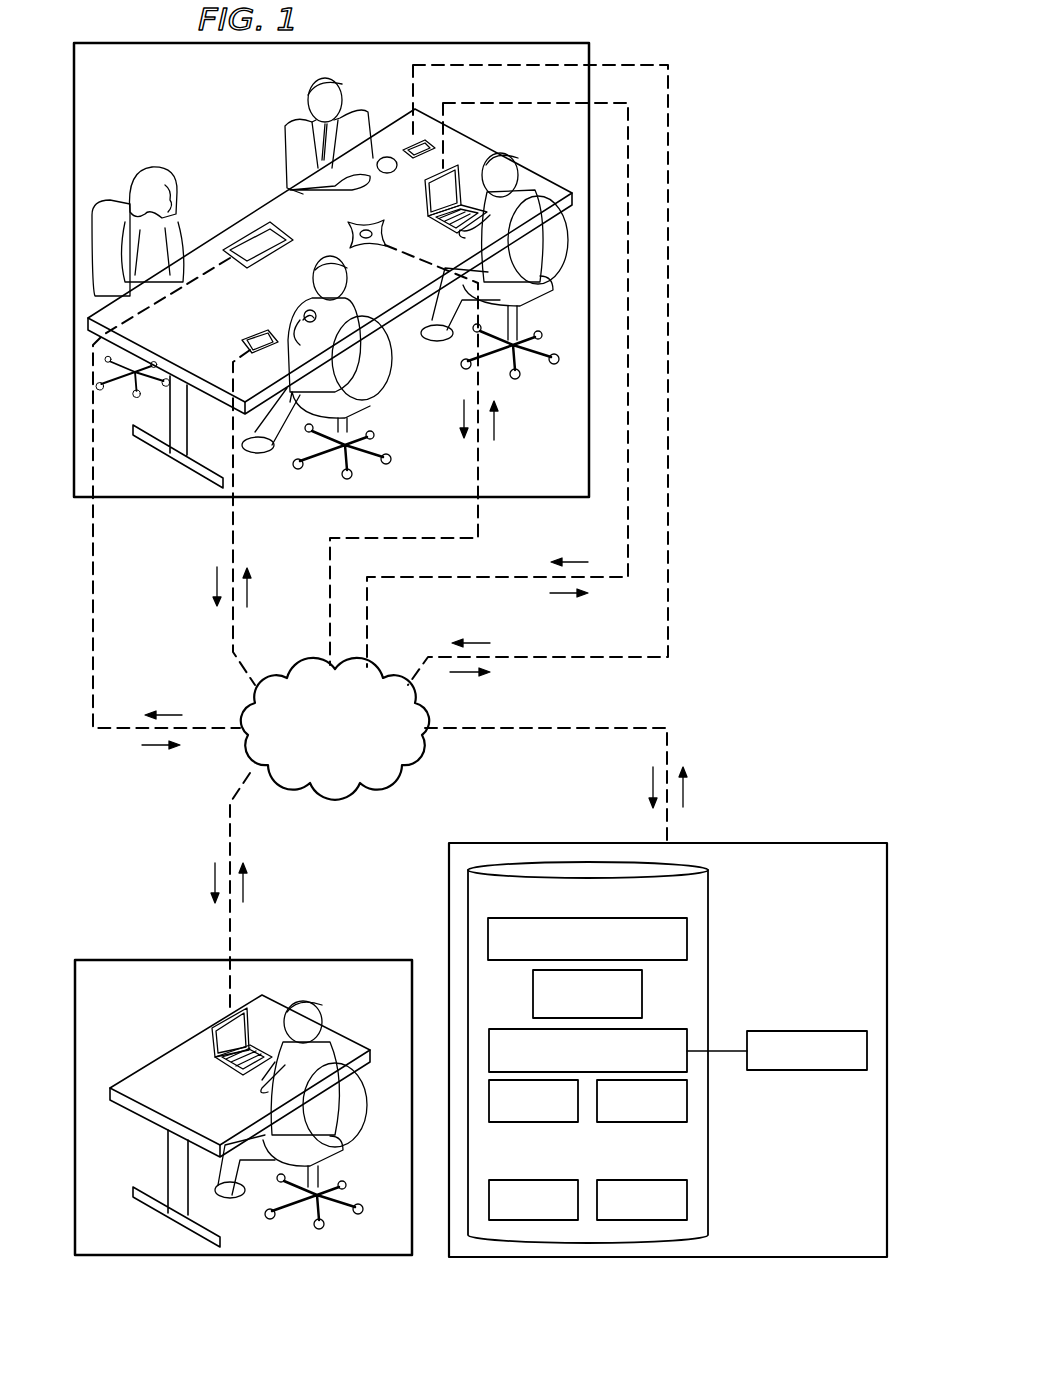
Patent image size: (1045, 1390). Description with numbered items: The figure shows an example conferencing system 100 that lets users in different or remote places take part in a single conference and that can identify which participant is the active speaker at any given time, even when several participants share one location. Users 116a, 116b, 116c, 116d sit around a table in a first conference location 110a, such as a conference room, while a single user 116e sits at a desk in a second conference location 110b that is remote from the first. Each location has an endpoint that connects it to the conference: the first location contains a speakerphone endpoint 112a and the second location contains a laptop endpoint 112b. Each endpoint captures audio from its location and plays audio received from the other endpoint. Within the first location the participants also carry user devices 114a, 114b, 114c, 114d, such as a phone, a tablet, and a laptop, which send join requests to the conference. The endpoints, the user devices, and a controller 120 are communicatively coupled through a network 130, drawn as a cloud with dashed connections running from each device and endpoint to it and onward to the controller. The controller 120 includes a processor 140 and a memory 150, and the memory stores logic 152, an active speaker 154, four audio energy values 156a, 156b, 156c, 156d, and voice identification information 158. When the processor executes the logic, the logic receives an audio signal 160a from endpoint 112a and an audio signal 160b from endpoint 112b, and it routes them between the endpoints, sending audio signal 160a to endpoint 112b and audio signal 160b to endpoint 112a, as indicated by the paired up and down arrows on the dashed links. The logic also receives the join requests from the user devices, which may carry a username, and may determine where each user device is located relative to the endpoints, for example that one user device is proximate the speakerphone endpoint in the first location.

The conferencing system 100 is at (786, 85).
The first conference location 110a is at (137, 88).
The second conference location 110b is at (135, 1235).
The endpoint 112a is at (369, 250).
The endpoint 112b is at (212, 1032).
The user device 114a is at (404, 140).
The user device 114b is at (243, 230).
The user device 114c is at (477, 143).
The user device 114d is at (250, 333).
The user 116a is at (290, 120).
The user 116b is at (142, 166).
The user 116c is at (555, 160).
The user 116d is at (323, 258).
The user 116e is at (317, 1017).
The controller 120 is at (816, 947).
The network 130 is at (349, 755).
The processor 140 is at (805, 1070).
The memory 150 is at (718, 1146).
The logic 152 is at (516, 960).
The active speaker 154 is at (650, 1029).
The audio energy value 156a is at (516, 1122).
The audio energy value 156b is at (625, 1122).
The audio energy value 156c is at (548, 1180).
The audio energy value 156d is at (658, 1180).
The voice identification information 158 is at (642, 978).
The audio signal 160a is at (460, 412).
The audio signal 160b is at (496, 422).